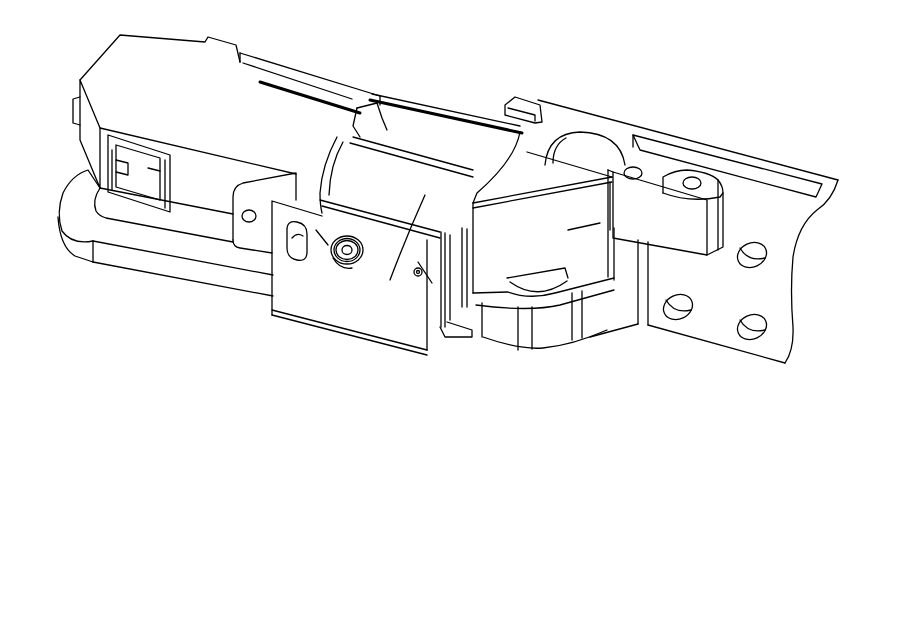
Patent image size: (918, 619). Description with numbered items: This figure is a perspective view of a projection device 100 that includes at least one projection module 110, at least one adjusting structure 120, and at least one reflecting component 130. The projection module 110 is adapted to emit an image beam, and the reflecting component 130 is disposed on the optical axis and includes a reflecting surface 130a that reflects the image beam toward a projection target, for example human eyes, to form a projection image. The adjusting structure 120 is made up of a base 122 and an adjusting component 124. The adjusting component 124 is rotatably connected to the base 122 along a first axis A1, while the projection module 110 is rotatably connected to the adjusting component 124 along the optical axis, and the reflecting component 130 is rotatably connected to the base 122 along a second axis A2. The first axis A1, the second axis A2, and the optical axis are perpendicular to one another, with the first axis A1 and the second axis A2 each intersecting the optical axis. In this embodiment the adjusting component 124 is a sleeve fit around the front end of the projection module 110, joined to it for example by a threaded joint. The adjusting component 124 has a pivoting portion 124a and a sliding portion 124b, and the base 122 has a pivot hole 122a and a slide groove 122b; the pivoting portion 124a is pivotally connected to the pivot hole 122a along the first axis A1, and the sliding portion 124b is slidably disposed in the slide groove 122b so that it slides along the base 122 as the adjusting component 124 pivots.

The projection device 100 is at (828, 559).
The projection module 110 is at (204, 192).
The adjusting structure 120 is at (405, 445).
The base 122 is at (443, 350).
The pivot hole 122a is at (465, 287).
The slide groove 122b is at (328, 245).
The adjusting component 124 is at (388, 203).
The pivoting portion 124a is at (432, 283).
The sliding portion 124b is at (336, 266).
The reflecting component 130 is at (565, 175).
The reflecting surface 130a is at (573, 240).
The first axis A1 is at (425, 272).
The second axis A2 is at (523, 180).